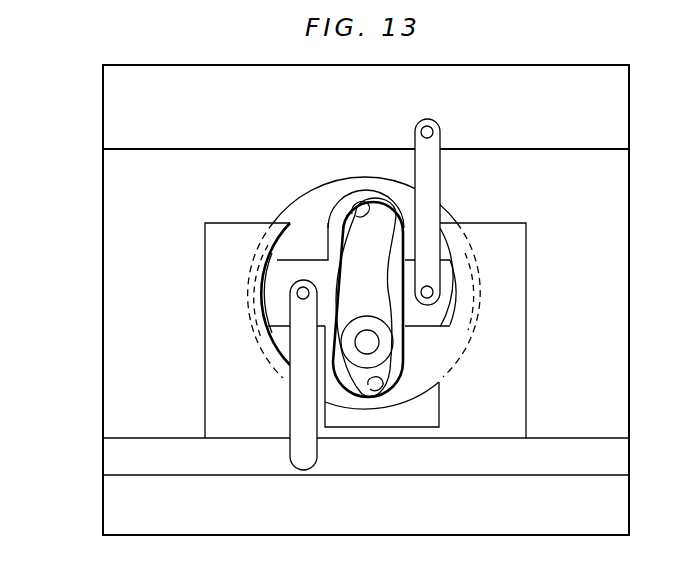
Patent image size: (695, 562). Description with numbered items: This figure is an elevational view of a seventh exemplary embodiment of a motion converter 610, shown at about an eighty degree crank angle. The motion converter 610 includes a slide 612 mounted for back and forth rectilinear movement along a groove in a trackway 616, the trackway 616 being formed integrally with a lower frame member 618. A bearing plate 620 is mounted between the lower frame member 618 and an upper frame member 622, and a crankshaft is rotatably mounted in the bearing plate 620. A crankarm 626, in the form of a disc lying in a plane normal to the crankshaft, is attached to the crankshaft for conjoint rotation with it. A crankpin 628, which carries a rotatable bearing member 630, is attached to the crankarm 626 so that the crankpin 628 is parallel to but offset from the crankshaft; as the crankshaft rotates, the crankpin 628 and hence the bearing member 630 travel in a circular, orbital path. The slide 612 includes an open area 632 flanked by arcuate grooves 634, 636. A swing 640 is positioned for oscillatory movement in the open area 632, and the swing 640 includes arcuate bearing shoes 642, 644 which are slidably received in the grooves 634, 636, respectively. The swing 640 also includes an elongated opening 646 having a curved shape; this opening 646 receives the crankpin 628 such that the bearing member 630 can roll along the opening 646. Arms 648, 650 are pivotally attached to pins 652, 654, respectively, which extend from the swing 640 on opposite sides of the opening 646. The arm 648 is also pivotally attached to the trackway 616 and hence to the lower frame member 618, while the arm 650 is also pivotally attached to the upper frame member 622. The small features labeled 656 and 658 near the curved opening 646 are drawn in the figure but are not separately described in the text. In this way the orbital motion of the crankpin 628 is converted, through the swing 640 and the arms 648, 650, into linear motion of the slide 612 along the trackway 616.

The motion converter 610 is at (66, 97).
The slide 612 is at (528, 258).
The trackway 616 is at (163, 464).
The lower frame member 618 is at (630, 508).
The bearing plate 620 is at (103, 316).
The upper frame member 622 is at (587, 82).
The crankarm 626 is at (292, 205).
The crankpin 628 is at (368, 330).
The bearing member 630 is at (353, 354).
The open area 632 is at (405, 413).
The arcuate groove 634 is at (280, 380).
The arcuate groove 636 is at (476, 224).
The swing 640 is at (307, 260).
The arcuate bearing shoe 642 is at (259, 306).
The arcuate bearing shoe 644 is at (463, 310).
The elongated opening 646 is at (368, 236).
The arm 648 is at (290, 442).
The arm 650 is at (427, 178).
The pin 652 is at (296, 294).
The pin 654 is at (434, 291).
The cam lobe 656 is at (352, 206).
The cam lobe 658 is at (378, 388).